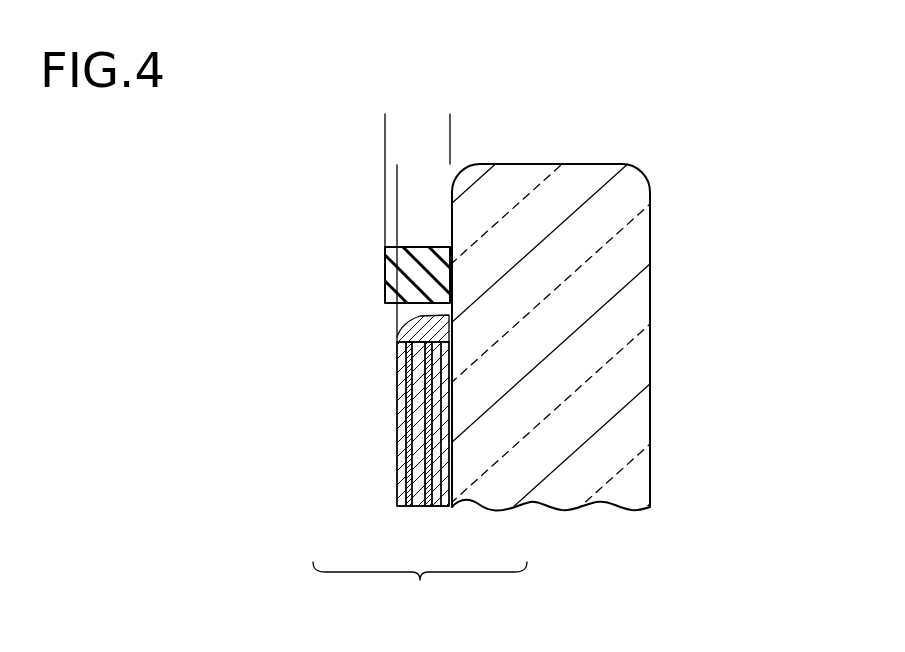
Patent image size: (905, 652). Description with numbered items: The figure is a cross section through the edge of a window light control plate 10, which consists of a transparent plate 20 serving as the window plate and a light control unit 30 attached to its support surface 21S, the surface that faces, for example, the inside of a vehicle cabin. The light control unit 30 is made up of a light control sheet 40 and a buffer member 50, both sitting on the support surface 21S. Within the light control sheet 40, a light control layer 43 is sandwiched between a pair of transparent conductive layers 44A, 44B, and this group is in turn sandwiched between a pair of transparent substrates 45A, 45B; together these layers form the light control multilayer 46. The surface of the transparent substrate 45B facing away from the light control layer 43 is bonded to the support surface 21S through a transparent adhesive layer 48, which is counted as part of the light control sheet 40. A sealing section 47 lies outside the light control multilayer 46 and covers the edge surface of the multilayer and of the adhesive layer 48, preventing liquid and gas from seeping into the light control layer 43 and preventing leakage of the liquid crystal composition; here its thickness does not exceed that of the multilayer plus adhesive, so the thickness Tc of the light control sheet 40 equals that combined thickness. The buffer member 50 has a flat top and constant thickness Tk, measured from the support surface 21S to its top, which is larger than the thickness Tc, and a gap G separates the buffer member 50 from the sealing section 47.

The window light control plate 10 is at (644, 142).
The transparent plate 20 is at (652, 240).
The support surface 21S is at (440, 226).
The light control unit 30 is at (325, 395).
The light control sheet 40 is at (419, 454).
The light control layer 43 is at (417, 506).
The transparent conductive layer 44A is at (410, 506).
The transparent conductive layer 44B is at (428, 506).
The transparent substrate 45A is at (405, 506).
The transparent substrate 45B is at (442, 506).
The light control multilayer 46 is at (420, 587).
The sealing section 47 is at (398, 333).
The adhesive layer 48 is at (445, 458).
The buffer member 50 is at (385, 255).
The gap G is at (377, 316).
The thickness of the buffer member Tk is at (441, 123).
The thickness of the light control sheet Tc is at (441, 175).